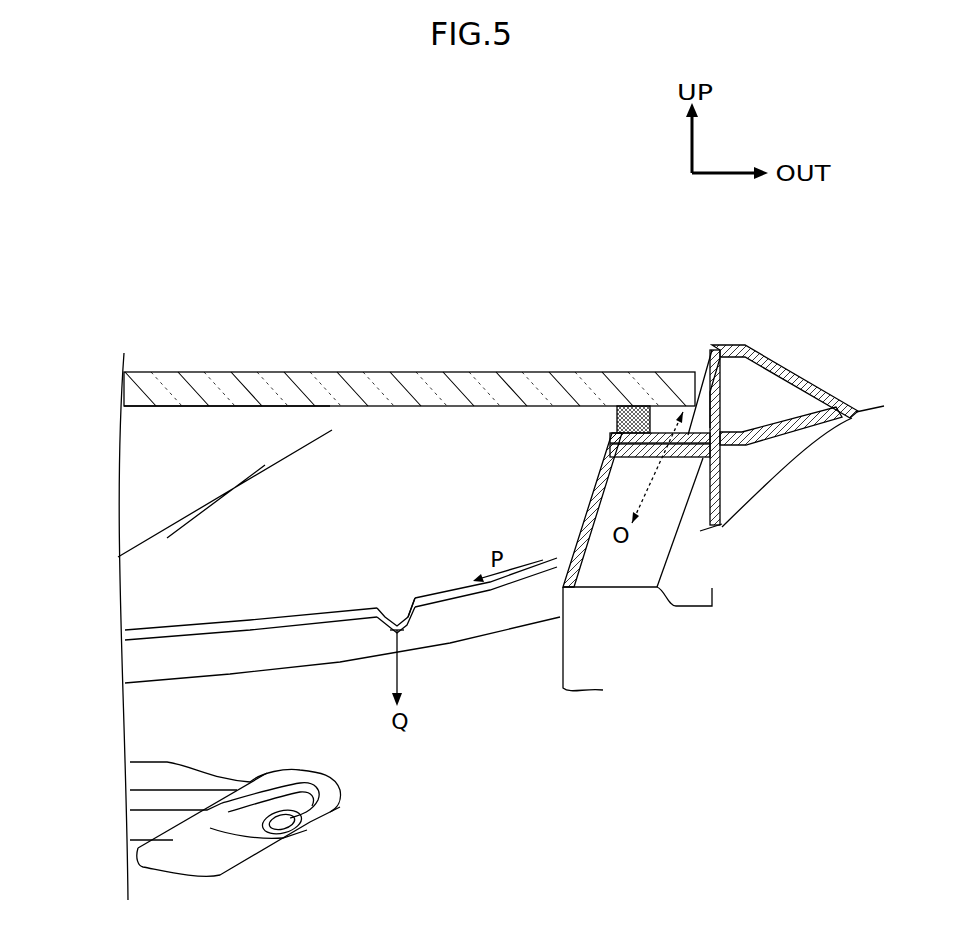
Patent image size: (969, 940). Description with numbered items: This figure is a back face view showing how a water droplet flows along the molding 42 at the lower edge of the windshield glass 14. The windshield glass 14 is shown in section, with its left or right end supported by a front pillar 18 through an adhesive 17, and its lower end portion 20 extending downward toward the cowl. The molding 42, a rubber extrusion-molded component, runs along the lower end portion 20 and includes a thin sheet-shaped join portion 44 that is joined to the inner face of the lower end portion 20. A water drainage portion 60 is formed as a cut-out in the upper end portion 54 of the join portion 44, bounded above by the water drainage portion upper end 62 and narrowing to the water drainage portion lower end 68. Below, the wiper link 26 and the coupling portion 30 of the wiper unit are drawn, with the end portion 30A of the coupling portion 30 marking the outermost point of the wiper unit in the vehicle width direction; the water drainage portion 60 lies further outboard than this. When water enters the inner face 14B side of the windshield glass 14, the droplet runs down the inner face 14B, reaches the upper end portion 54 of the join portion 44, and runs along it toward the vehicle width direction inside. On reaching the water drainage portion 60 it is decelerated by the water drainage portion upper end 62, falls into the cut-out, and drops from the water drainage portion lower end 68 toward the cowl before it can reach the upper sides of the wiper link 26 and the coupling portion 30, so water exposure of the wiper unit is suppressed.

The windshield glass 14 is at (437, 372).
The inner face of windshield glass 14B is at (192, 402).
The adhesive 17 is at (628, 420).
The front pillar 18 is at (758, 347).
The lower end portion of windshield glass 20 is at (132, 606).
The wiper link 26 is at (150, 823).
The coupling portion 30 is at (244, 852).
The end portion of coupling portion 30A is at (341, 793).
The molding 42 is at (181, 622).
The join portion 44 is at (298, 655).
The upper end portion of join portion 54 is at (287, 610).
The water drainage portion 60 is at (391, 594).
The water drainage portion upper end 62 is at (404, 597).
The water drainage portion lower end 68 is at (408, 624).